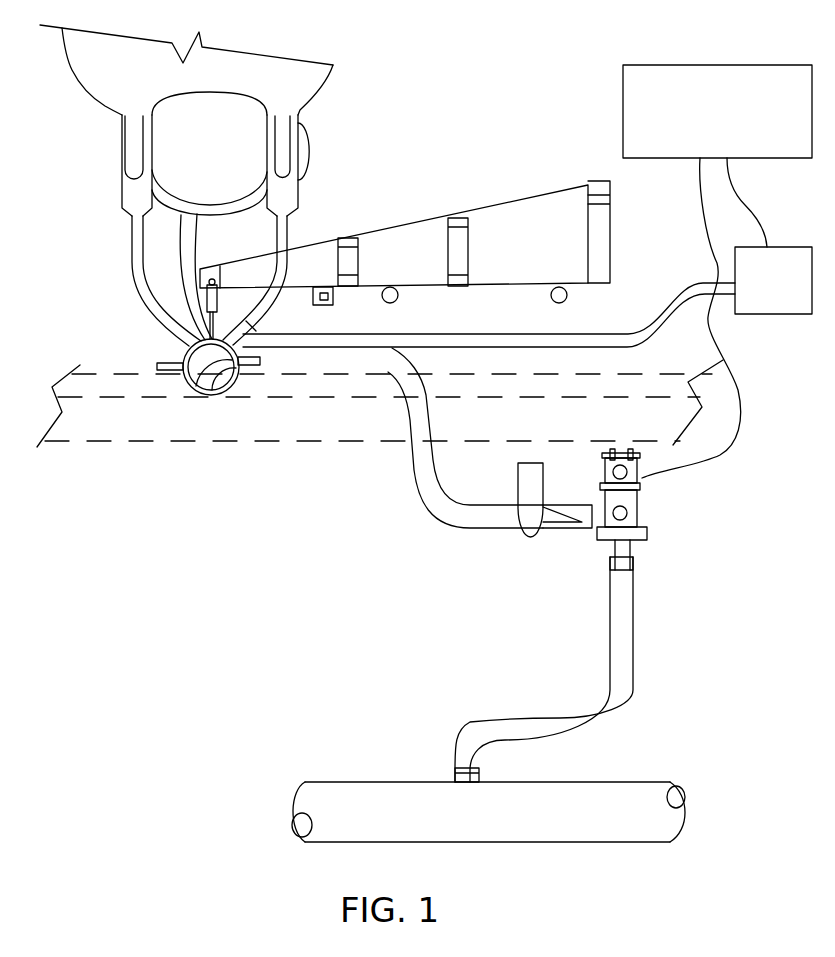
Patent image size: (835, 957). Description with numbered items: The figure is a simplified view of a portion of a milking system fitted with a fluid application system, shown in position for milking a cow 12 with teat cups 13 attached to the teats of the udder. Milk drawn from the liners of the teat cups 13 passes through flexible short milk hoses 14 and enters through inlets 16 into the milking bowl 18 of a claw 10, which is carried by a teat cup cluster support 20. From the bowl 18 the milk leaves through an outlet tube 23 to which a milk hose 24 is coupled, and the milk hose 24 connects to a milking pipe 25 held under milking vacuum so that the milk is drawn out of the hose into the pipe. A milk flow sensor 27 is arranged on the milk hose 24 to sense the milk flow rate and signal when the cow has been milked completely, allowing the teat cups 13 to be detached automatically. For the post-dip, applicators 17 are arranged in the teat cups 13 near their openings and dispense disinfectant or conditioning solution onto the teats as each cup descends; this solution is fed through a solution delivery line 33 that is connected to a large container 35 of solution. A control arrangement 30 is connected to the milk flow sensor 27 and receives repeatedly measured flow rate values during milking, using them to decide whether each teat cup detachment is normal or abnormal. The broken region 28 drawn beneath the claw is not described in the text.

The claw 10 is at (193, 395).
The cow 12 is at (70, 58).
The teat cups 13 is at (120, 185).
The short milk hoses 14 is at (130, 272).
The inlets 16 is at (165, 338).
The applicators 17 is at (120, 125).
The milking bowl 18 is at (217, 395).
The teat cup cluster support 20 is at (400, 232).
The outlet tube 23 is at (213, 327).
The milk hose 24 is at (410, 407).
The milking pipe 25 is at (345, 782).
The milk flow sensor 27 is at (642, 487).
The web 28 is at (337, 441).
The control arrangement 30 is at (715, 65).
The solution delivery line 33 is at (178, 257).
The container 35 is at (780, 318).